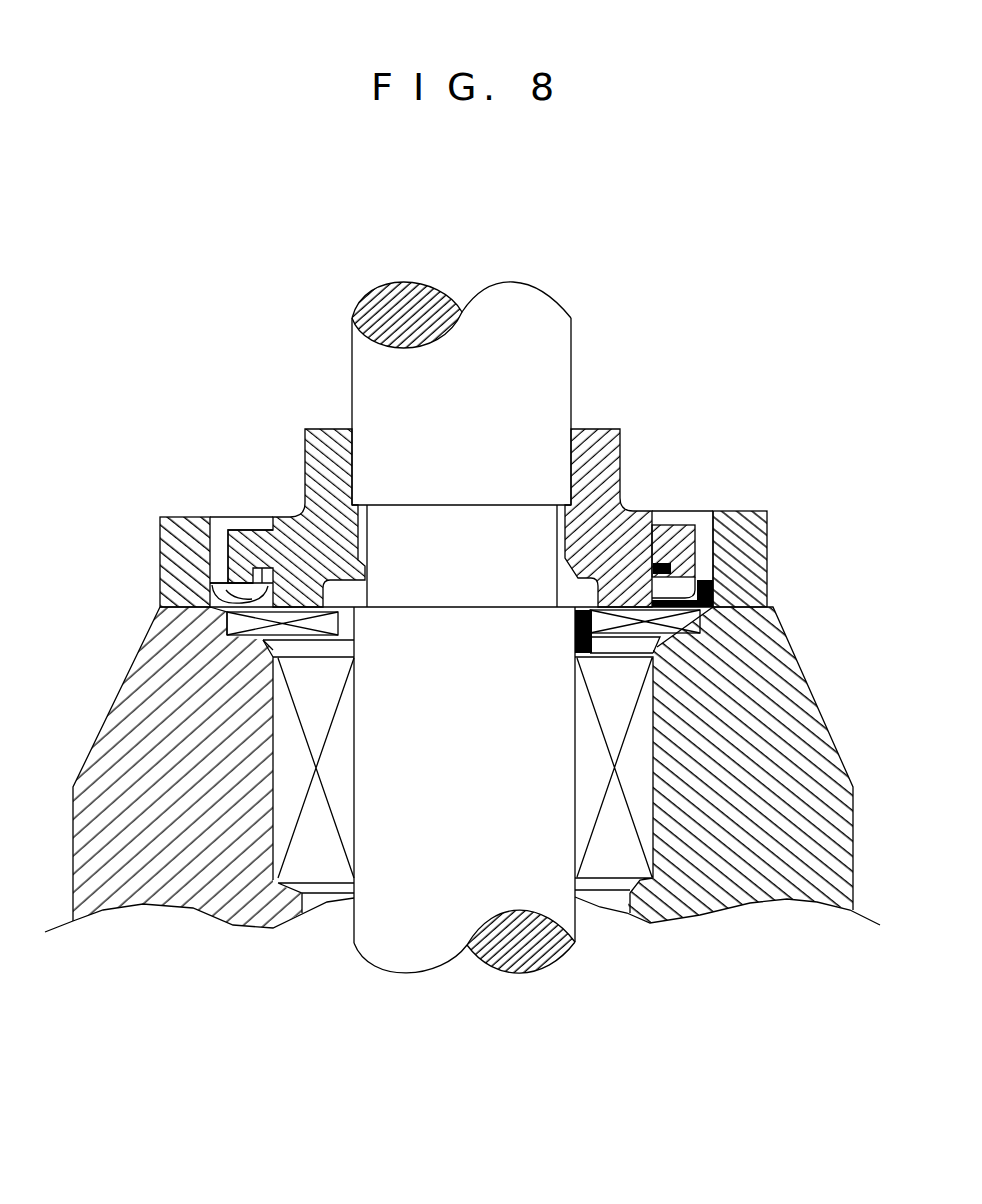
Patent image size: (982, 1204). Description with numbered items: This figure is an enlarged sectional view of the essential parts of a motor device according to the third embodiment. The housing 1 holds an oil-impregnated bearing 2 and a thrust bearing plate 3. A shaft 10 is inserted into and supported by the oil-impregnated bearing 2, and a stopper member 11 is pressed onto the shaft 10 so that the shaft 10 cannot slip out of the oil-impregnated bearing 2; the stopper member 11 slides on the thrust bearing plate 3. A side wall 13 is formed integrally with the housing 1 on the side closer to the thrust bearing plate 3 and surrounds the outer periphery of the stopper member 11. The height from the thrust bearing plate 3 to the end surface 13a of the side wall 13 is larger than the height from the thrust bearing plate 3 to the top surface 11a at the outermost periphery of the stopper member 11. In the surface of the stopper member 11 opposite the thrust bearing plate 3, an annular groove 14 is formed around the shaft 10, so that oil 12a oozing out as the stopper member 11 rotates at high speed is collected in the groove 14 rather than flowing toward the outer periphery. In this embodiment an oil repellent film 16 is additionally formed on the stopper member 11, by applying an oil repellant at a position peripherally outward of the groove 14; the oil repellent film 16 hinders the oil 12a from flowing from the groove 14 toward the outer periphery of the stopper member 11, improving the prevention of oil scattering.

The housing 1 is at (743, 770).
The oil-impregnated bearing 2 is at (642, 800).
The thrust bearing plate 3 is at (227, 623).
The shaft 10 is at (492, 327).
The stopper member 11 is at (590, 430).
The top surface of outermost periphery of the stopper member 11a is at (240, 528).
The oil 12a is at (655, 522).
The side wall 13 is at (770, 512).
The end surface of the side wall 13a is at (183, 517).
The annular groove 14 is at (215, 600).
The oil repellent film 16 is at (220, 602).